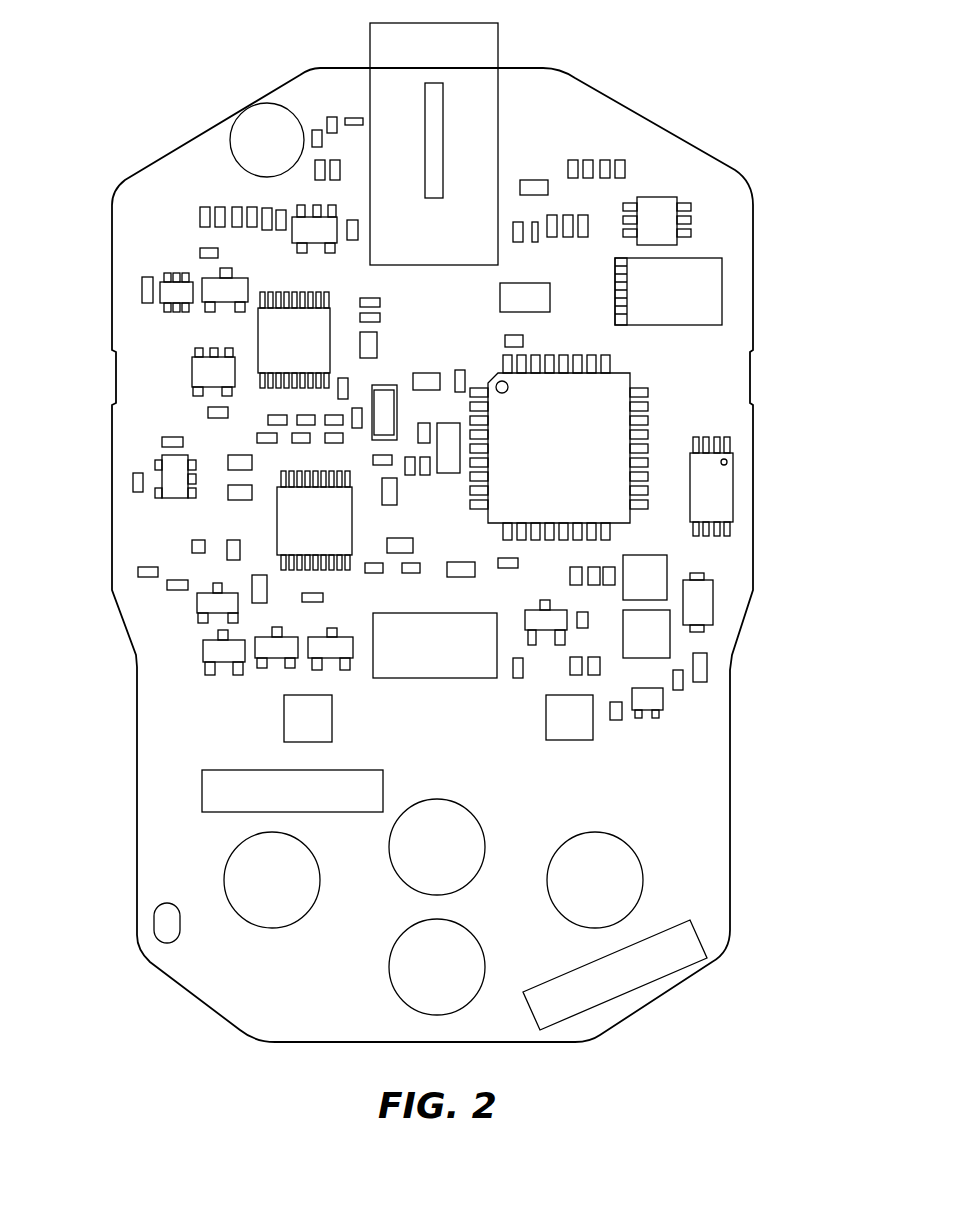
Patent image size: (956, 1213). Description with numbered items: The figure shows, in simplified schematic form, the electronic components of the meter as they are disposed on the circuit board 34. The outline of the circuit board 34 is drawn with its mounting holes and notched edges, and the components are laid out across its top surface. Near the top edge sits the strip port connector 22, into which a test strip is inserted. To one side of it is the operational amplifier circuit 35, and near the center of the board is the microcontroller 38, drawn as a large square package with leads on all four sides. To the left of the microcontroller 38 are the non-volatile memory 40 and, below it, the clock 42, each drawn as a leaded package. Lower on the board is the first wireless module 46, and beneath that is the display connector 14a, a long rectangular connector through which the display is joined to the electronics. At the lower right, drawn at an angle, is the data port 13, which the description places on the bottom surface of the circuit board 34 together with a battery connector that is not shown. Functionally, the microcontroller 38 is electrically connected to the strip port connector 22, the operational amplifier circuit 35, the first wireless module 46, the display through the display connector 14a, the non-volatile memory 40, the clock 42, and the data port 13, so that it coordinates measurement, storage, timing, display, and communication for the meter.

The strip port connector 22 is at (490, 45).
The circuit board 34 is at (622, 108).
The operational amplifier circuit 35 is at (663, 208).
The microcontroller 38 is at (608, 390).
The non-volatile memory 40 is at (280, 330).
The clock 42 is at (330, 525).
The first wireless module 46 is at (445, 680).
The display connector 14a is at (212, 790).
The data port 13 is at (640, 970).